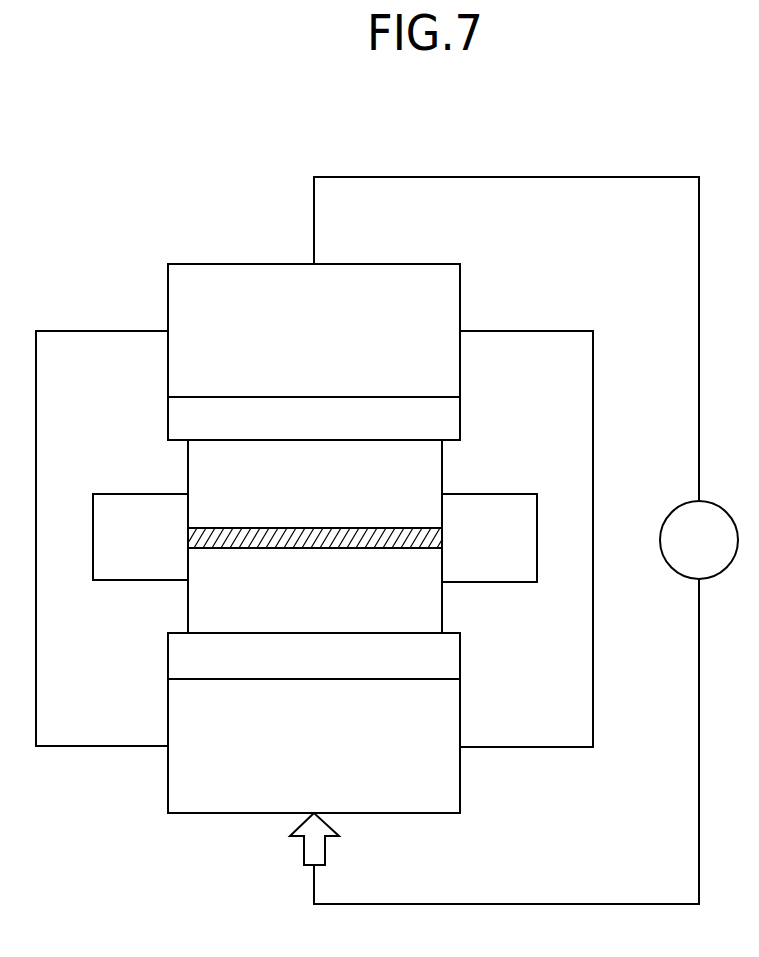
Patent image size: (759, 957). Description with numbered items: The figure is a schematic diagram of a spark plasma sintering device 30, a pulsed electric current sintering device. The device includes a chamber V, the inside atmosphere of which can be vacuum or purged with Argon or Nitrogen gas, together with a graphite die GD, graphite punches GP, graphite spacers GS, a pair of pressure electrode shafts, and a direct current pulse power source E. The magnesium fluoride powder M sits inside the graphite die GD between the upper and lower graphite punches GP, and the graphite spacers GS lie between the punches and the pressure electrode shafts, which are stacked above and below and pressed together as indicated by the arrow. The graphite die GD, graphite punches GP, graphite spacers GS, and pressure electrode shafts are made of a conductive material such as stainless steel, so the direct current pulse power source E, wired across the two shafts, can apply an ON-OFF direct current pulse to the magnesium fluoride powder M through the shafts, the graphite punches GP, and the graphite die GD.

The spark plasma sintering device 30 is at (480, 146).
The direct current pulse power source E is at (699, 540).
The chamber V is at (568, 356).
The graphite spacers GS is at (314, 538).
The graphite punches GP is at (315, 536).
The graphite die GD is at (315, 538).
The magnesium fluoride powder M is at (392, 537).